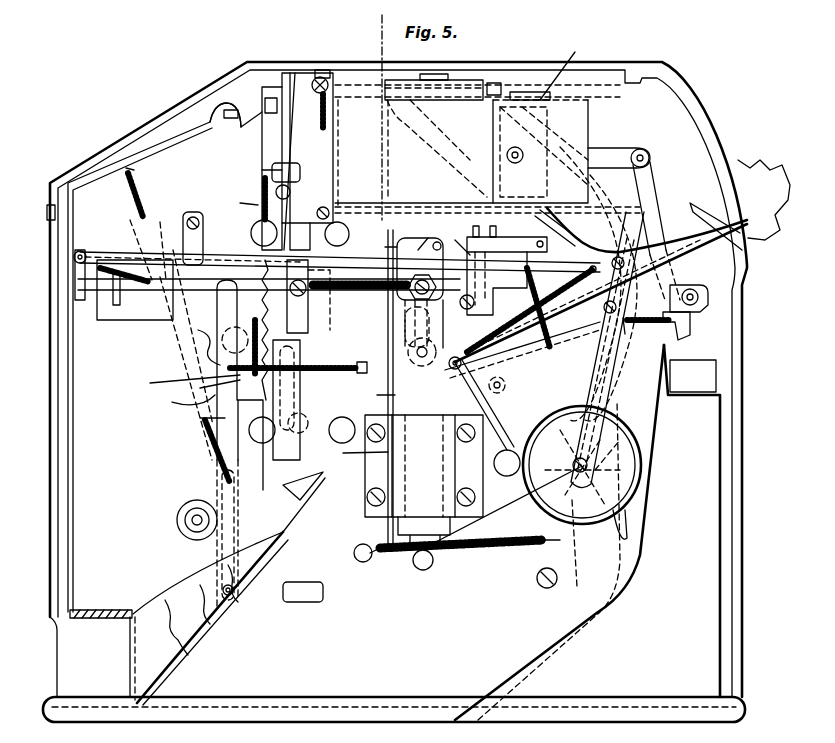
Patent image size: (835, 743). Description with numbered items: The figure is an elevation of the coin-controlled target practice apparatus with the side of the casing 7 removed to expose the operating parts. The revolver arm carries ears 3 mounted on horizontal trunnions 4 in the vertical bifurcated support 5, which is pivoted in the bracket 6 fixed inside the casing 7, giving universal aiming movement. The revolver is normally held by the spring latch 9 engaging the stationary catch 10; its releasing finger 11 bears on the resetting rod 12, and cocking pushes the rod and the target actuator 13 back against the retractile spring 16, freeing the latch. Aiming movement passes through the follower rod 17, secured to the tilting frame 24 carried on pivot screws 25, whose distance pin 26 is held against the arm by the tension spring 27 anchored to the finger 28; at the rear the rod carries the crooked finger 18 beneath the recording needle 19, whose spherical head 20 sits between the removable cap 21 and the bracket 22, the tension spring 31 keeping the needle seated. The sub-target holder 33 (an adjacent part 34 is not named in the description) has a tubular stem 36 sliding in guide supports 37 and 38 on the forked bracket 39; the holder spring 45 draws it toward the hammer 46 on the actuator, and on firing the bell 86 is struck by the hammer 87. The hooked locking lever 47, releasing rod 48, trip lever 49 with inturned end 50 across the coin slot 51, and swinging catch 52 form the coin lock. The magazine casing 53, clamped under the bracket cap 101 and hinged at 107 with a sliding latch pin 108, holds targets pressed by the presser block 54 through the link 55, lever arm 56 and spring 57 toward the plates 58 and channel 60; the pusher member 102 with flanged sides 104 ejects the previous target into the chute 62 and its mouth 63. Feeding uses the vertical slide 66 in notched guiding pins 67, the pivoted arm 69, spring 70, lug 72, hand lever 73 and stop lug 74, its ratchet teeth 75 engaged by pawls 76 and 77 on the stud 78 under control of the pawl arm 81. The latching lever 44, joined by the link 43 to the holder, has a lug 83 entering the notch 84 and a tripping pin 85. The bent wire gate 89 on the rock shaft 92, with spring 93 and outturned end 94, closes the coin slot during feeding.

The ears 3 is at (378, 348).
The horizontal trunnions 4 is at (400, 310).
The vertical bifurcated support 5 is at (378, 395).
The bracket 6 is at (425, 468).
The casing 7 is at (58, 420).
The spring latch 9 is at (695, 322).
The stationary catch 10 is at (680, 352).
The releasing finger 11 is at (695, 285).
The resetting rod 12 is at (768, 200).
The target actuator 13 is at (405, 348).
The retractile spring 16 is at (480, 385).
The follower rod 17 is at (215, 260).
The crooked finger 18 is at (78, 284).
The recording needle 19 is at (170, 300).
The spherical head 20 is at (108, 298).
The removable cap 21 is at (117, 306).
The bracket 22 is at (105, 320).
The tilting frame 24 is at (520, 230).
The horizontal pivot screws 25 is at (466, 310).
The adjustable distance pin 26 is at (575, 250).
The tension spring 27 is at (560, 290).
The finger 28 is at (530, 355).
The tension spring 31 is at (133, 250).
The sub-target holder 33 is at (300, 345).
The link 34 is at (165, 248).
The tubular stem 36 is at (321, 300).
The guide support 37 is at (408, 300).
The guide support 38 is at (384, 240).
The forked bracket 39 is at (258, 130).
The link 43 is at (260, 225).
The feed latching and tripping lever 44 is at (193, 422).
The sub-target holder spring 45 is at (362, 230).
The target hammer 46 is at (457, 238).
The hooked locking lever 47 is at (422, 235).
The vertical releasing rod 48 is at (355, 453).
The trip lever 49 is at (497, 515).
The inturned end 50 is at (595, 470).
The coin slot 51 is at (620, 575).
The swinging catch 52 is at (497, 283).
The sheet metal casing 53 is at (575, 118).
The presser block 54 is at (500, 148).
The link 55 is at (620, 155).
The upright lever arm 56 is at (660, 185).
The tension spring 57 is at (490, 555).
The plates 58 is at (262, 150).
The channel 60 is at (297, 296).
The chute 62 is at (195, 345).
The mouth 63 is at (62, 660).
The vertical slide 66 is at (260, 190).
The notched guiding pins 67 is at (335, 215).
The pivoted arm 69 is at (220, 505).
The tension spring 70 is at (146, 192).
The lug 72 is at (300, 172).
The hand lever 73 is at (318, 490).
The stop lug 74 is at (300, 580).
The ratchet teeth 75 is at (234, 205).
The pawl 76 is at (209, 389).
The pawl 77 is at (271, 330).
The pin or stud 78 is at (230, 360).
The pawl arm 81 is at (222, 338).
The lug 83 is at (180, 400).
The notch 84 is at (305, 375).
The tripping pin 85 is at (181, 382).
The bell 86 is at (625, 490).
The hammer 87 is at (510, 452).
The bent wire gate 89 is at (440, 74).
The rock shaft 92 is at (365, 85).
The tension spring 93 is at (328, 120).
The outturned end 94 is at (323, 72).
The bracket cap 101 is at (302, 90).
The pusher member 102 is at (262, 140).
The flanged sides 104 is at (262, 170).
The hinge 107 is at (462, 198).
The sliding latch pin 108 is at (577, 64).